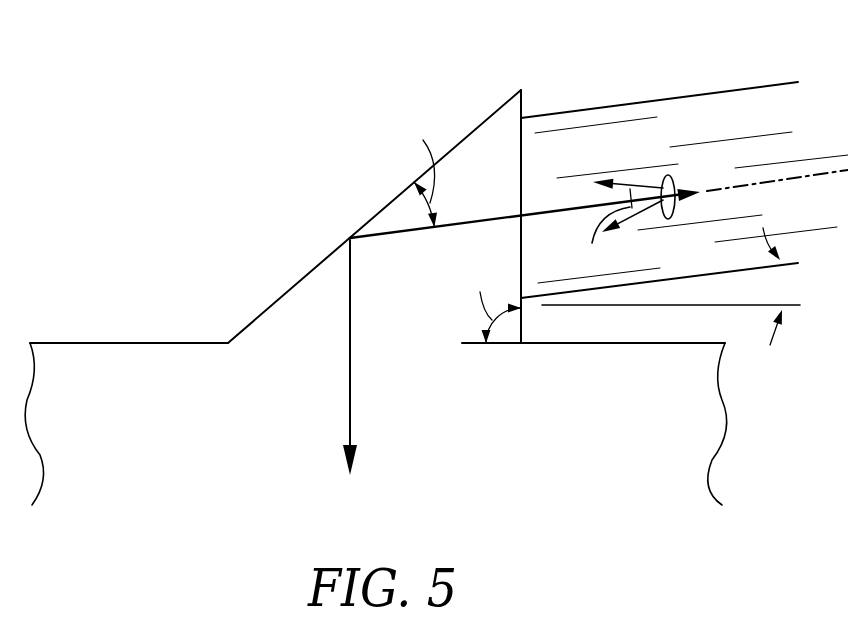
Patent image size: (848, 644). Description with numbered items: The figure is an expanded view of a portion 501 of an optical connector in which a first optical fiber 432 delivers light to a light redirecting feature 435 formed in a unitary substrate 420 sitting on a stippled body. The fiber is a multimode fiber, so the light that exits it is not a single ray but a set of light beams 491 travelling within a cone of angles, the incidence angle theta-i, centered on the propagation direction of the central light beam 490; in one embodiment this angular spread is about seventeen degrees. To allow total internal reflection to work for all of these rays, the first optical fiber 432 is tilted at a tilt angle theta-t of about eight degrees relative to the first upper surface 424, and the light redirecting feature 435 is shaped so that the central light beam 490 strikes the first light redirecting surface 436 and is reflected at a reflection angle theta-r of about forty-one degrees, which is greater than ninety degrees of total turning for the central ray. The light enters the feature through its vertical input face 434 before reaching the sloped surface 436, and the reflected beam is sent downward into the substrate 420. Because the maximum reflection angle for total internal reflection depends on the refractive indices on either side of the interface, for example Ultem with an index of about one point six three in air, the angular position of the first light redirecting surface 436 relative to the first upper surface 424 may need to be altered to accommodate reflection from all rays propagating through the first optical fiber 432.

The portion 501 is at (220, 145).
The substrate 420 is at (97, 372).
The first upper surface 424 is at (180, 343).
The first light redirecting surface 436 is at (285, 295).
The light redirecting feature 435 is at (481, 98).
The vertical input facet 434 is at (522, 157).
The first optical fiber 432 is at (737, 105).
The light beam 490 is at (483, 218).
The light beams 491 is at (670, 177).